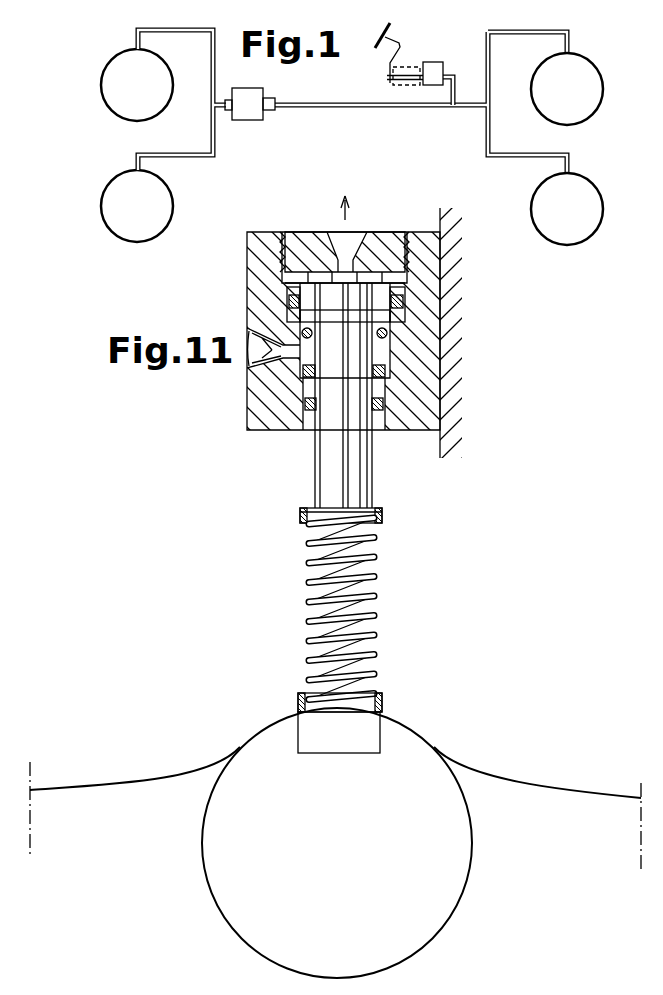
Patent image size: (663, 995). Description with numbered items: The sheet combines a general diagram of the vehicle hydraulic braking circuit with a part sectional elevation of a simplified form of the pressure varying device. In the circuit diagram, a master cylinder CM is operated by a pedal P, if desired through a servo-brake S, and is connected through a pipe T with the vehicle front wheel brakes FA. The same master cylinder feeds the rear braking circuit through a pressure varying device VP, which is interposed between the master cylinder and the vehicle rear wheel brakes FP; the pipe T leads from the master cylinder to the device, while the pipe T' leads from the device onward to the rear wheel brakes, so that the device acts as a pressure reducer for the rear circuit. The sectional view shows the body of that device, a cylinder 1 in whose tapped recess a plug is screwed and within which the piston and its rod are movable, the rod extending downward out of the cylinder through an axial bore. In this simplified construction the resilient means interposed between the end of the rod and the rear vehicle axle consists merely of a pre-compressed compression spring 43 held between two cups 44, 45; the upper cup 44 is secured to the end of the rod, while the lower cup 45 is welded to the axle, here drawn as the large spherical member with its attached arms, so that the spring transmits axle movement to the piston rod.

In FIG. 1, the vehicle rear wheel brakes FP is at (118, 68).
In FIG. 1, the vehicle front wheel brakes FA is at (582, 68).
In FIG. 1, the pipe T' is at (229, 133).
In FIG. 1, the pressure varying device VP is at (257, 110).
In FIG. 1, the pipe T is at (417, 111).
In FIG. 1, the pedal P is at (393, 40).
In FIG. 1, the servo-brake S is at (408, 66).
In FIG. 1, the master cylinder CM is at (437, 72).
In FIG. 11, the cylinder 1 is at (440, 353).
In FIG. 11, the cup 44 is at (382, 522).
In FIG. 11, the pre-compressed compression spring 43 is at (382, 587).
In FIG. 11, the cup 45 is at (382, 710).